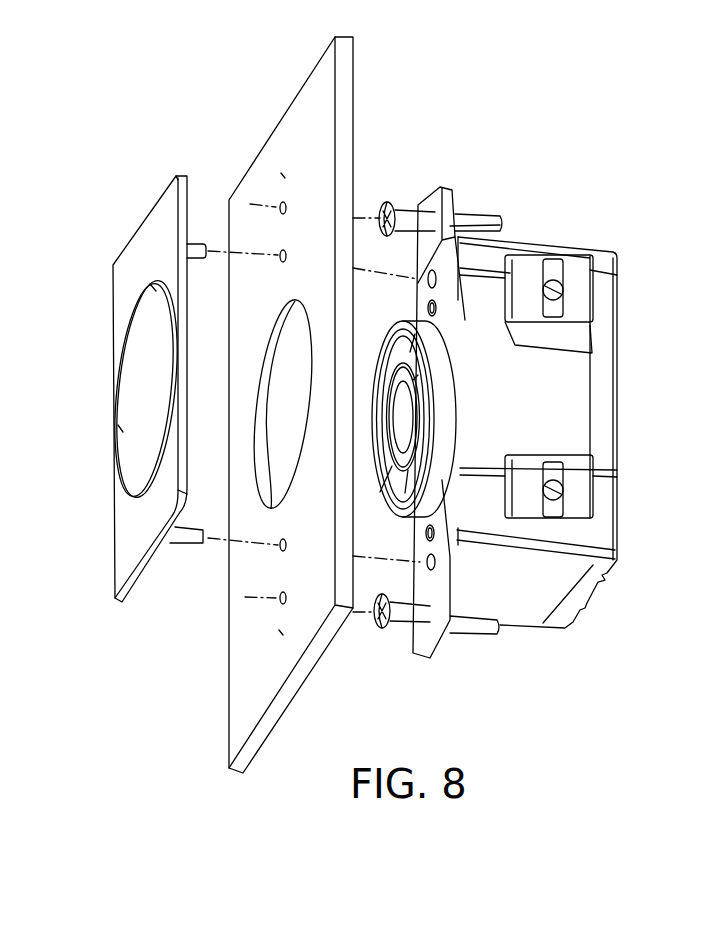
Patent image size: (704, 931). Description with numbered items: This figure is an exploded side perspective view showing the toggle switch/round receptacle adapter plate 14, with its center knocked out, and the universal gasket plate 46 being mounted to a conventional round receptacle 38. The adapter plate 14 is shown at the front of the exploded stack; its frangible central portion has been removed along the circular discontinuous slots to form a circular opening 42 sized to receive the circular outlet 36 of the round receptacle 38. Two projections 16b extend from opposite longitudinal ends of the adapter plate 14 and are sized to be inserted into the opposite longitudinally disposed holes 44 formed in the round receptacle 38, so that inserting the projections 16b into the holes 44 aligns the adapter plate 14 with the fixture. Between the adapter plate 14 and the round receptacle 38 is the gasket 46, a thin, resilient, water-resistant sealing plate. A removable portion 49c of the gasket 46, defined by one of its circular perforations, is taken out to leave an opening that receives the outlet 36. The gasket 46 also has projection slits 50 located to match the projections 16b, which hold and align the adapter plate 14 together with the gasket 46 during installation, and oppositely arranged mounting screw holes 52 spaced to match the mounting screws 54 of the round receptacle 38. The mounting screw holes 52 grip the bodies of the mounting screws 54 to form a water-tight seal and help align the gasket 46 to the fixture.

The toggle switch/round receptacle adapter plate 14 is at (112, 389).
The projections 16b is at (203, 243).
The outlet 36 is at (445, 357).
The round receptacle 38 is at (612, 380).
The circular opening 42 is at (138, 380).
The holes 44 is at (423, 282).
The universal gasket plate 46 is at (298, 389).
The removable gasket portion 49c is at (274, 298).
The projection slits 50 is at (286, 252).
The mounting screw holes 52 is at (285, 200).
The mounting screws 54 is at (412, 210).